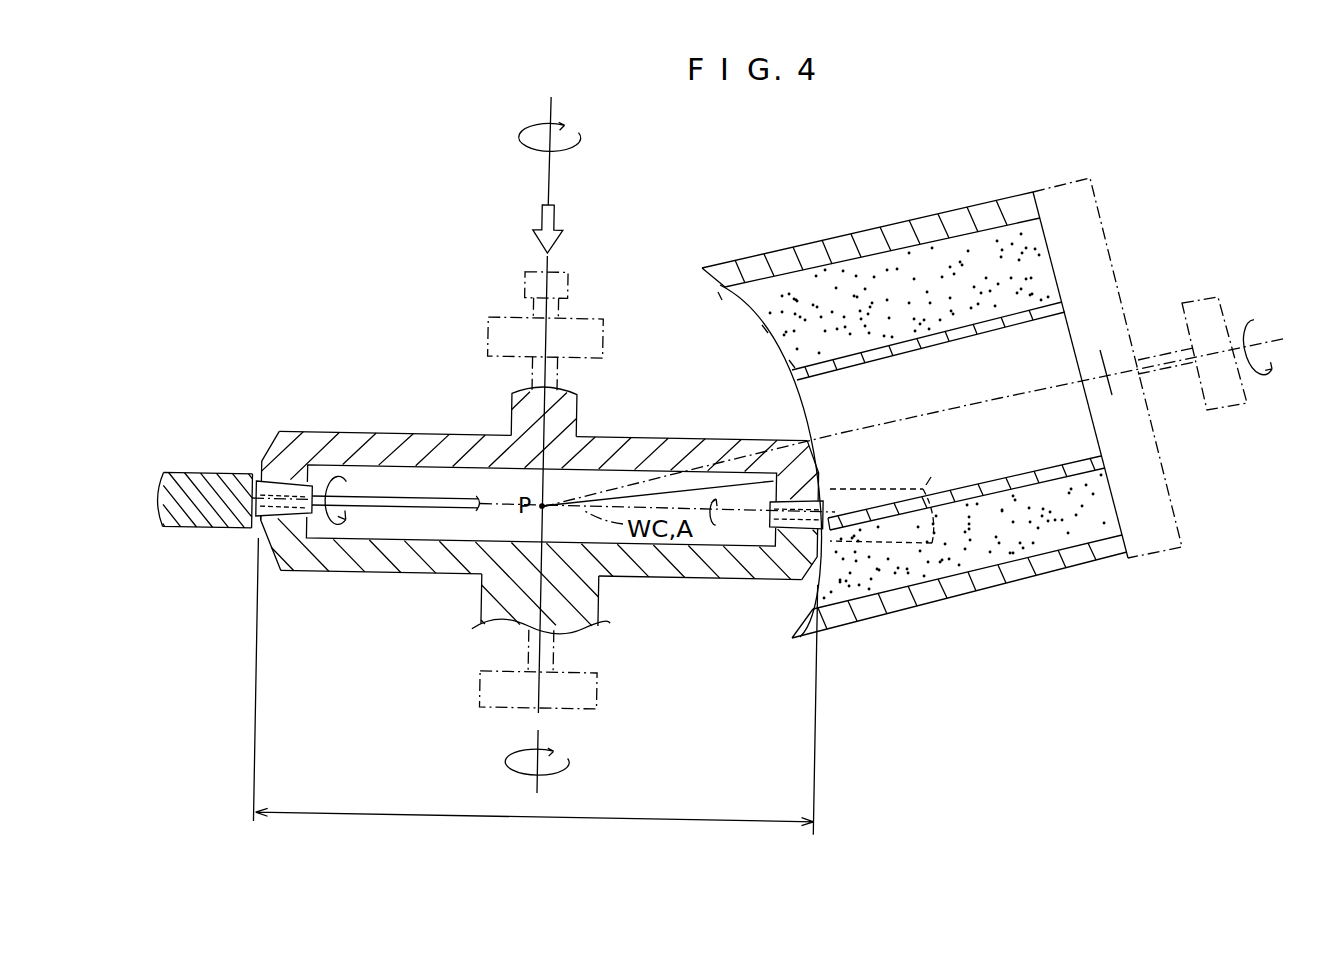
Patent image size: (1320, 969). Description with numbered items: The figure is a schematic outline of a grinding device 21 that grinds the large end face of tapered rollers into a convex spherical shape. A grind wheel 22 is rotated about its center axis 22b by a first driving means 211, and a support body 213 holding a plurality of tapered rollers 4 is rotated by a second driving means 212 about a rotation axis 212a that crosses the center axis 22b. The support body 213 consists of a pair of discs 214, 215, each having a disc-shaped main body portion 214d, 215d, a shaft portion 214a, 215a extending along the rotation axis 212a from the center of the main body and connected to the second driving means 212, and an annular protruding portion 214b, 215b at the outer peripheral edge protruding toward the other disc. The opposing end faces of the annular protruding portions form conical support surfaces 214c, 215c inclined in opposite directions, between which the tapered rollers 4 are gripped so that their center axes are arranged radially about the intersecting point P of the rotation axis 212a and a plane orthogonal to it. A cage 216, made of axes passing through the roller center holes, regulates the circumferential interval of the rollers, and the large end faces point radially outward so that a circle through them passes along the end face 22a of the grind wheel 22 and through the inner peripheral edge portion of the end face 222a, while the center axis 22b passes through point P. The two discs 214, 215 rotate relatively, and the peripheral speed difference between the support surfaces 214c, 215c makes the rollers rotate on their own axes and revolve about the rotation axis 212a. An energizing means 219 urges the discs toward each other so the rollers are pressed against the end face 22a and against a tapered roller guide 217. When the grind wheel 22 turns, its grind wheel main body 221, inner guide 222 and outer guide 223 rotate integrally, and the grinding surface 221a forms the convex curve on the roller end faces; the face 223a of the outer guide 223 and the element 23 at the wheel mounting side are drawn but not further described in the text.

The grinding device 21 is at (381, 270).
The second driving means 212 is at (498, 315).
The energizing means 219 is at (533, 270).
The disc 214 is at (350, 556).
The shaft portion 214a is at (560, 418).
The annular protruding portion 214b is at (287, 475).
The support surface 214c is at (235, 477).
The main body portion 214d is at (405, 455).
The disc 215 is at (318, 573).
The shaft portion 215a is at (590, 600).
The annular protruding portion 215b is at (297, 535).
The support surface 215c is at (238, 512).
The main body portion 215d is at (422, 573).
The support body 213 is at (396, 637).
The rotation axis 212a is at (512, 405).
The cage 216 is at (395, 495).
The tapered roller guide 217 is at (207, 473).
The tapered roller 4 is at (290, 528).
The grind wheel 22 is at (807, 115).
The grind wheel main body 221 is at (865, 287).
The inner guide 222 is at (883, 232).
The outer guide 223 is at (922, 333).
The end face of grind wheel 22a is at (672, 308).
The grinding surface 221a is at (765, 328).
The end face of inner guide 222a is at (792, 363).
The bond layer surface 223a is at (716, 291).
The center axis of grind wheel 22b is at (1108, 377).
The first driving means 211 is at (1210, 410).
The flange 23 is at (1182, 527).